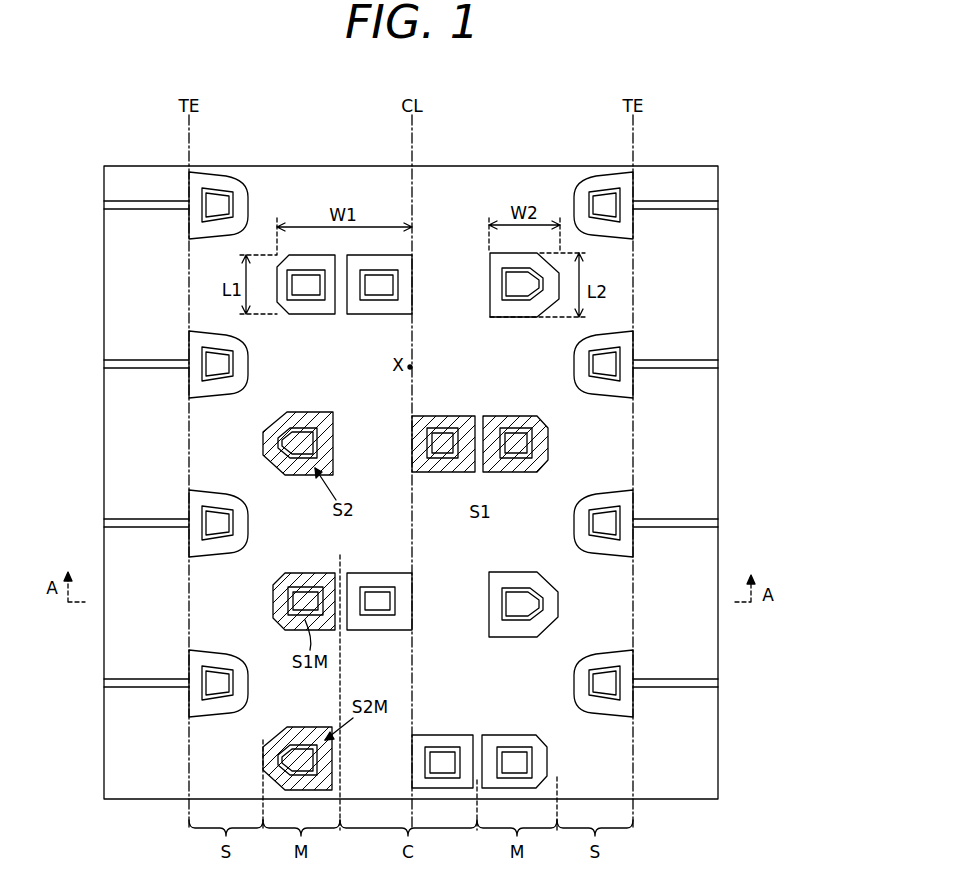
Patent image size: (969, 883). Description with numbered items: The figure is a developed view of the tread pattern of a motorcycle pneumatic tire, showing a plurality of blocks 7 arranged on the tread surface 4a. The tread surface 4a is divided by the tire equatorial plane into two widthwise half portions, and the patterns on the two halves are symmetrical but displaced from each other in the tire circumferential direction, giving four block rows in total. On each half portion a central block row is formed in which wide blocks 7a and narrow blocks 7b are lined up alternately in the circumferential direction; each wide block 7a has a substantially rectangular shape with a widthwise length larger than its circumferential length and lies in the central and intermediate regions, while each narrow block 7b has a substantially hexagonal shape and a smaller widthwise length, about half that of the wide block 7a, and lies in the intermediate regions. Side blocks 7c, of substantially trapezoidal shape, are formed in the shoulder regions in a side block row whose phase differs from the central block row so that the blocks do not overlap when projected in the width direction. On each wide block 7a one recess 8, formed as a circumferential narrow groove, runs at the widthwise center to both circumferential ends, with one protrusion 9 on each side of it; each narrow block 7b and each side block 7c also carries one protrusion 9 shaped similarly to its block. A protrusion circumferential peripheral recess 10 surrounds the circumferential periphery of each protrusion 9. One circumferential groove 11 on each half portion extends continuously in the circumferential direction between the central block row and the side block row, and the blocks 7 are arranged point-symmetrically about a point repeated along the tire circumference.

The tread surface 4a is at (617, 430).
The blocks 7 is at (411, 521).
The wide block 7a is at (357, 314).
The narrow block 7b is at (490, 284).
The side block 7c is at (213, 396).
The recess 8 is at (478, 416).
The protrusion 9 is at (297, 456).
The protrusion circumferential peripheral recess 10 is at (325, 445).
The circumferential groove 11 is at (262, 180).